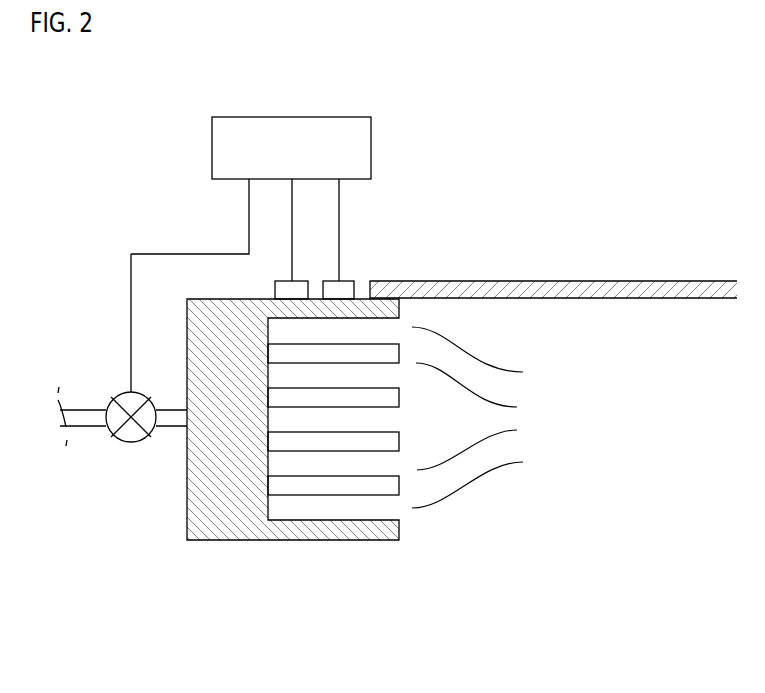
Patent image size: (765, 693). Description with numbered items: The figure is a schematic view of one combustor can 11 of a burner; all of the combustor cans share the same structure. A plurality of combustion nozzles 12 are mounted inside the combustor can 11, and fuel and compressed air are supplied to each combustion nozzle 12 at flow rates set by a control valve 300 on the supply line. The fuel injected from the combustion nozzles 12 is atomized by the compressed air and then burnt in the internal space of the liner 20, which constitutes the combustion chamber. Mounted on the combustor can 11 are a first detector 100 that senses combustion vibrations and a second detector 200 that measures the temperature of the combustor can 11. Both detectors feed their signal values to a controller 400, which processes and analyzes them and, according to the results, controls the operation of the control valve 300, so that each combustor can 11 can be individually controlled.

The combustor can 11 is at (250, 568).
The combustion nozzle 12 is at (399, 488).
The liner 20 is at (620, 292).
The first detector 100 is at (287, 288).
The second detector 200 is at (345, 291).
The control valve 300 is at (132, 433).
The controller 400 is at (251, 199).